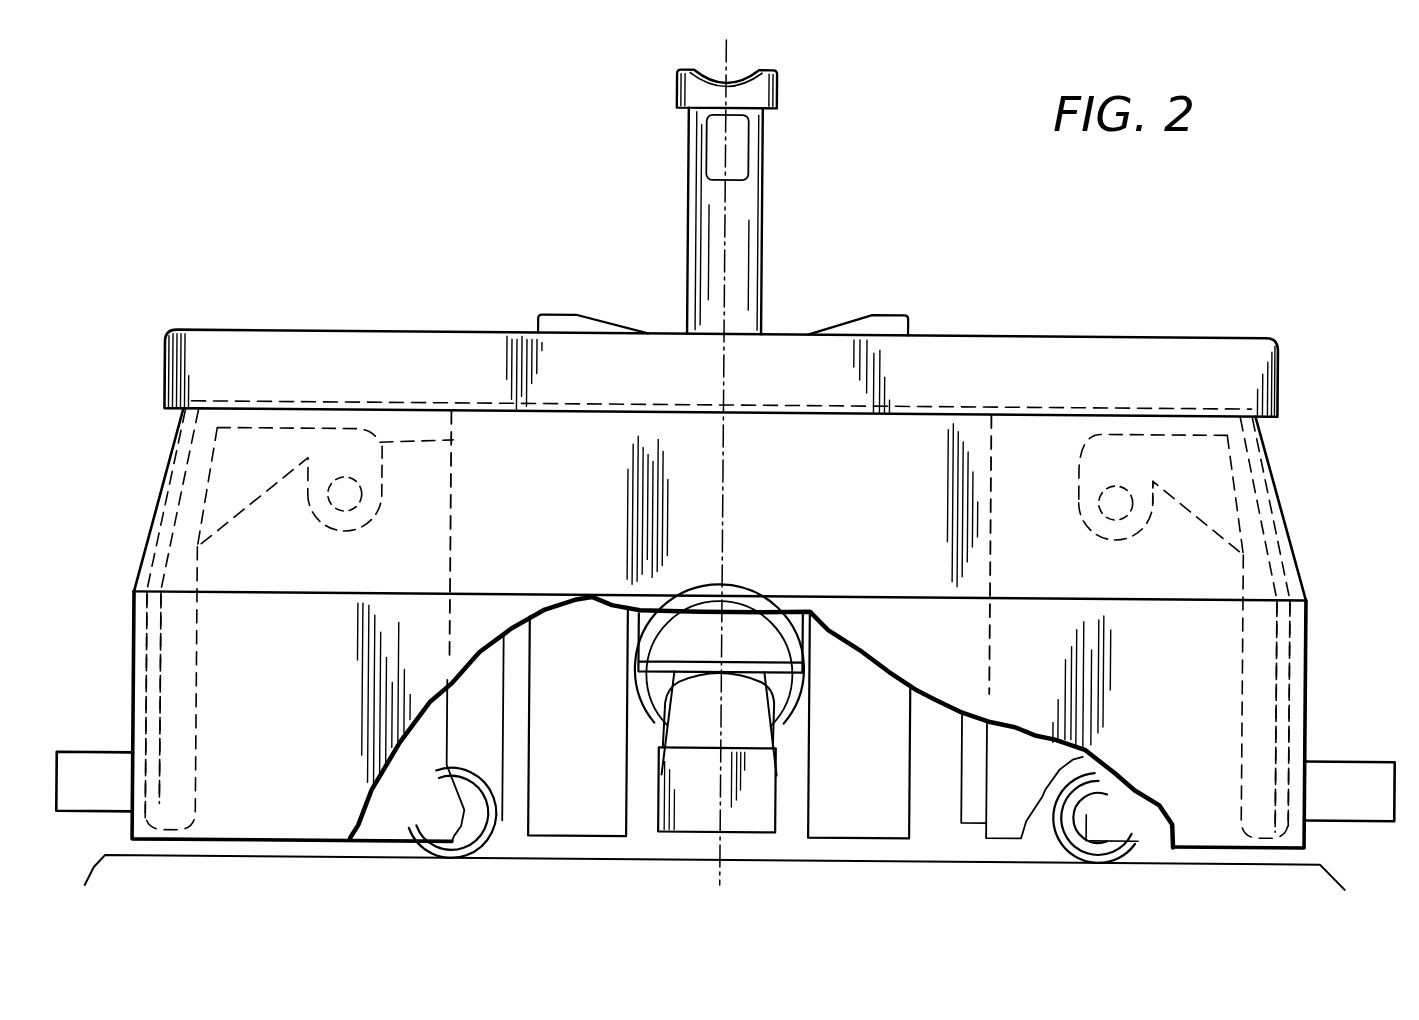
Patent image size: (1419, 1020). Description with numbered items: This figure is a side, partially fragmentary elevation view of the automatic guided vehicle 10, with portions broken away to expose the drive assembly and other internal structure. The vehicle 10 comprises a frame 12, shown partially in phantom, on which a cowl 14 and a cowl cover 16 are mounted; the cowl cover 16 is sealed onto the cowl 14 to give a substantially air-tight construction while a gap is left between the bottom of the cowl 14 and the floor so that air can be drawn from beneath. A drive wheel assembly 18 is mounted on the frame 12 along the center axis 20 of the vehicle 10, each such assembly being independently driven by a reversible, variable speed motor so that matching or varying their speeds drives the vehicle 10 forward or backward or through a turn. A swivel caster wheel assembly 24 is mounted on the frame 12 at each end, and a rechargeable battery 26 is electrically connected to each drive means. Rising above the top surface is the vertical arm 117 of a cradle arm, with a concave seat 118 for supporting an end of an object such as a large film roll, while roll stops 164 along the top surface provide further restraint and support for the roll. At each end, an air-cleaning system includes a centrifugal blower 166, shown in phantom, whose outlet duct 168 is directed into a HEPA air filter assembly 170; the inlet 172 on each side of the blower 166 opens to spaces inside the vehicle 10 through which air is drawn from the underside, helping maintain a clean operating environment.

The automatic guided vehicle 10 is at (277, 315).
The frame 12 is at (172, 484).
The cowl 14 is at (134, 617).
The cowl cover 16 is at (163, 349).
The drive wheel assembly 18 is at (703, 725).
The center axis 20 is at (722, 69).
The swivel caster wheel assembly 24 is at (467, 852).
The rechargeable battery 26 is at (592, 820).
The vertical arm 117 is at (752, 191).
The concave seat 118 is at (742, 73).
The roll stop 164 is at (560, 313).
The centrifugal blower 166 is at (452, 442).
The outlet duct 168 is at (245, 505).
The HEPA air filter assembly 170 is at (151, 694).
The inlet 172 is at (350, 514).